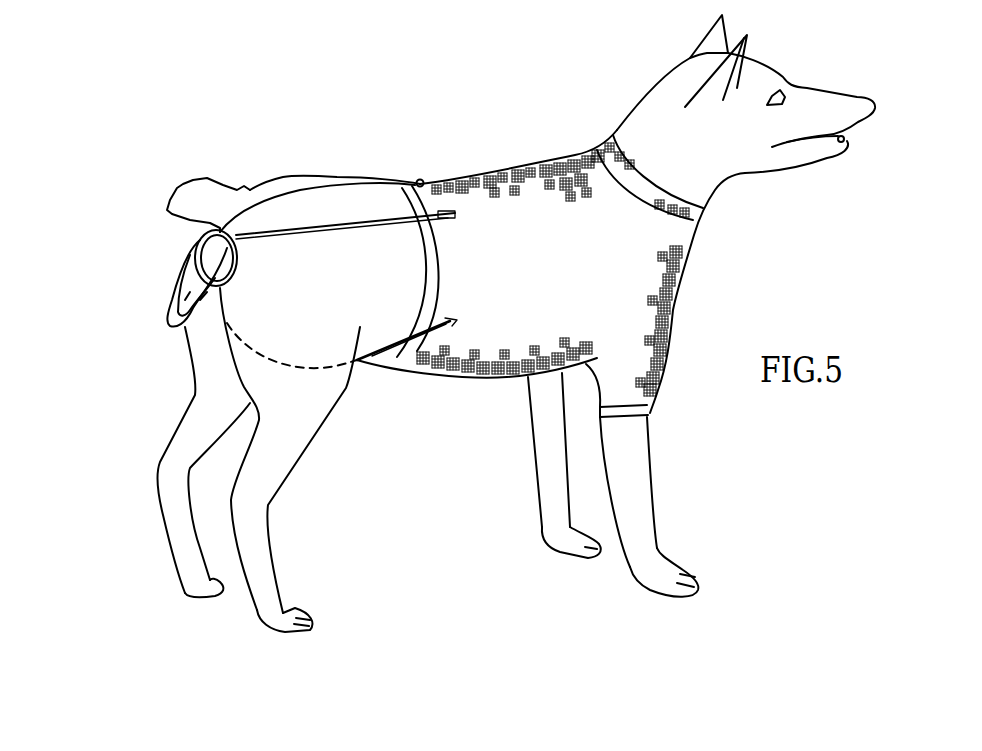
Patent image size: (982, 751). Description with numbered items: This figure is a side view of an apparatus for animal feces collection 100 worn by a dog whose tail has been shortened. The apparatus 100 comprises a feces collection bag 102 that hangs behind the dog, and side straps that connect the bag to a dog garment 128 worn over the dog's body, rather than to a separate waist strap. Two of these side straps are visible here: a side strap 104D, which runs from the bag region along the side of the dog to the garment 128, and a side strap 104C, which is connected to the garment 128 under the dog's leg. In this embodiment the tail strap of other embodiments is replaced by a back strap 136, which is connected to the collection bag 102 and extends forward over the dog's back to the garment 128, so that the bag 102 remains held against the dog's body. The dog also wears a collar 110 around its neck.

The apparatus for animal feces collection 100 is at (140, 257).
The feces collection bag 102 is at (167, 291).
The side strap 104C is at (375, 357).
The side strap 104D is at (340, 223).
The collar 110 is at (695, 178).
The dog garment 128 is at (492, 185).
The back strap 136 is at (300, 191).